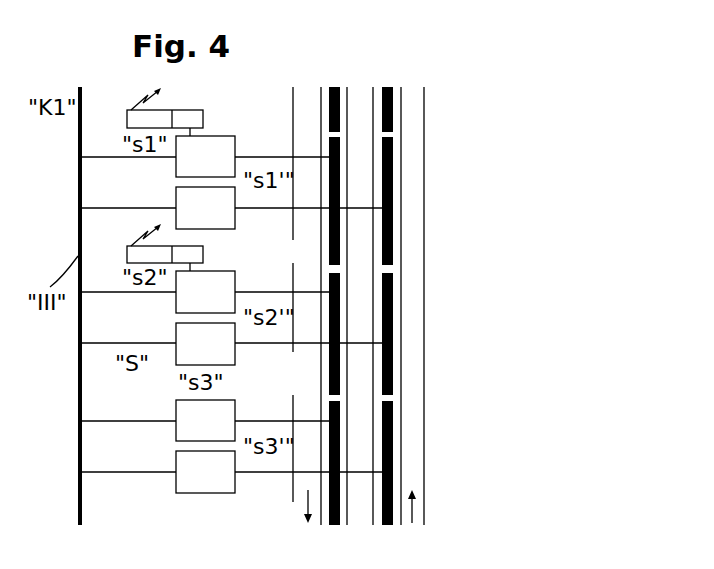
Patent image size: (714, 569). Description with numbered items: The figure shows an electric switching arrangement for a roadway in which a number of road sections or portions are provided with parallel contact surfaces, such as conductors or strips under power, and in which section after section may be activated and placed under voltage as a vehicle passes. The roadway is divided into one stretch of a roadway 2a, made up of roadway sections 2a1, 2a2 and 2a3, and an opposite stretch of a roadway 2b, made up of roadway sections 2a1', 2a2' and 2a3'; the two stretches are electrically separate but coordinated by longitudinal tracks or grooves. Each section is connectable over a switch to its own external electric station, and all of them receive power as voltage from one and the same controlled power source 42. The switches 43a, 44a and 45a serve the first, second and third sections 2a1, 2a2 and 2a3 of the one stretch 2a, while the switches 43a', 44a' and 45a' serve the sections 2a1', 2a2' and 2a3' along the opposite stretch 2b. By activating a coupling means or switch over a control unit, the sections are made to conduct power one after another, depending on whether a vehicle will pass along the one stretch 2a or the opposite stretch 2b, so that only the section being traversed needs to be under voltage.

The stretch of a roadway 2a is at (335, 87).
The opposite stretch of a roadway 2b is at (397, 110).
The roadway section 2a1 is at (291, 185).
The roadway section 2a1' is at (444, 201).
The roadway section 2a2 is at (291, 318).
The roadway section 2a2' is at (444, 334).
The roadway section 2a3 is at (291, 449).
The roadway section 2a3' is at (444, 463).
The controlled power source 42 is at (78, 226).
The switch 43a is at (204, 159).
The switch 43a' is at (231, 204).
The switch 44a is at (204, 295).
The switch 44a' is at (231, 341).
The switch 45a is at (204, 415).
The switch 45a' is at (231, 466).